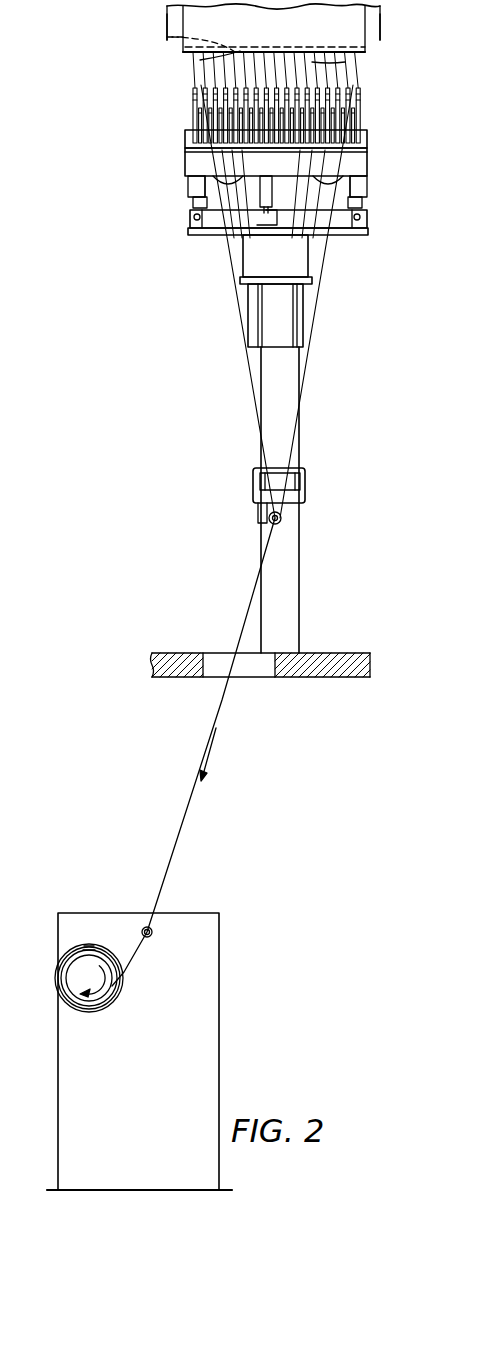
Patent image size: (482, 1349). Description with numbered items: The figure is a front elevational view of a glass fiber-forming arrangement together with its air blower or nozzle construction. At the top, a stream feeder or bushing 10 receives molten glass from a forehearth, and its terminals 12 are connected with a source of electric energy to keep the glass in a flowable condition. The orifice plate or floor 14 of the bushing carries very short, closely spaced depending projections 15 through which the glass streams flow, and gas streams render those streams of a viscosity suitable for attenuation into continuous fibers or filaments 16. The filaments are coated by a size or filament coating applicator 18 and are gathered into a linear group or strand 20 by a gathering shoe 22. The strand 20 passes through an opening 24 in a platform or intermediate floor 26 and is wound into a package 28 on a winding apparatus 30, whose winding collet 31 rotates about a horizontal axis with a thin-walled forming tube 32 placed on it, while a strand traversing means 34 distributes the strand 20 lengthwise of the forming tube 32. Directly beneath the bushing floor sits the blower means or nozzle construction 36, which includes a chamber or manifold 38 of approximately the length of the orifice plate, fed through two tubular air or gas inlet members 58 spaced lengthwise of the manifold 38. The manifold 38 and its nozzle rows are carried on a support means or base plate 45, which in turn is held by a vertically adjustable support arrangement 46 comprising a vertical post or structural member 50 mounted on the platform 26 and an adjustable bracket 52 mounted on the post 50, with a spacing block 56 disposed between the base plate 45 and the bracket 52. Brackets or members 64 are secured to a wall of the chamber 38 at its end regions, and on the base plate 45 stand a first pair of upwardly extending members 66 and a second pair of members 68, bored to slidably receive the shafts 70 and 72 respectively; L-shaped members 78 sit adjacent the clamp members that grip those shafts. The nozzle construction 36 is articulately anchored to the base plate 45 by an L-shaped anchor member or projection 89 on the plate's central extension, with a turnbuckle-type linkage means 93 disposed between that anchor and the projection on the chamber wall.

The stream feeder or bushing 10 is at (278, 35).
The terminals 12 is at (167, 20).
The orifice plate or floor 14 is at (172, 40).
The depending projections 15 is at (200, 60).
The continuous fibers or filaments 16 is at (305, 72).
The size or filament coating applicator 18 is at (253, 482).
The linear group or strand 20 is at (251, 606).
The gathering shoe 22 is at (268, 524).
The opening 24 is at (247, 667).
The platform or intermediate floor 26 is at (178, 652).
The package 28 is at (88, 943).
The winding apparatus 30 is at (220, 910).
The winding collet 31 is at (78, 971).
The collecting tube or forming tube 32 is at (73, 988).
The strand traversing means 34 is at (155, 928).
The blower means or nozzle construction 36 is at (367, 118).
The chamber or manifold 38 is at (370, 148).
The support means or base plate 45 is at (208, 237).
The support arrangement or structural means 46 is at (323, 302).
The post or structural member 50 is at (293, 582).
The adjustable means or bracket 52 is at (291, 327).
The spacing block 56 is at (300, 270).
The tubular air or gas inlet members 58 is at (228, 183).
The brackets or members 64 is at (190, 180).
The first pair of upwardly extending members 66 is at (190, 233).
The second pair of members 68 is at (365, 232).
The shaft 70 is at (194, 218).
The shaft 72 is at (361, 217).
The L-shaped members 78 is at (193, 203).
The L-shaped anchor member or projection 89 is at (280, 221).
The linkage means 93 is at (277, 193).